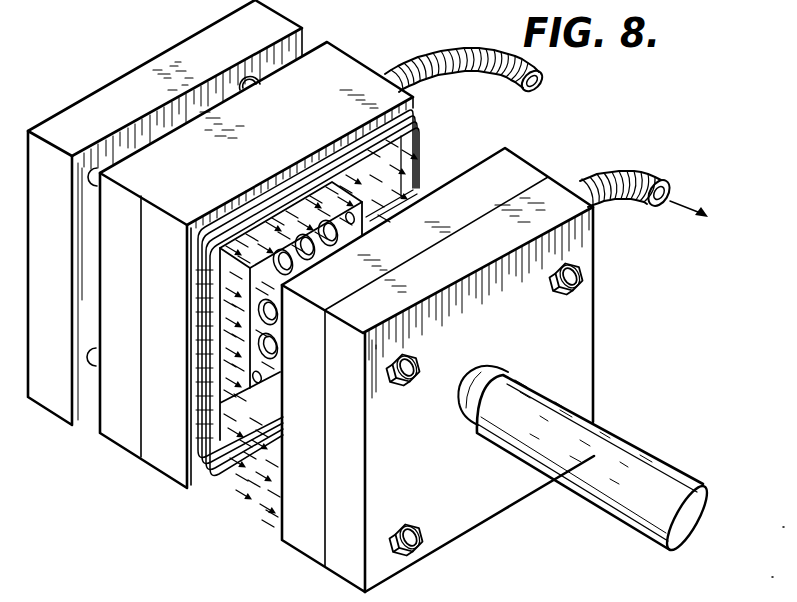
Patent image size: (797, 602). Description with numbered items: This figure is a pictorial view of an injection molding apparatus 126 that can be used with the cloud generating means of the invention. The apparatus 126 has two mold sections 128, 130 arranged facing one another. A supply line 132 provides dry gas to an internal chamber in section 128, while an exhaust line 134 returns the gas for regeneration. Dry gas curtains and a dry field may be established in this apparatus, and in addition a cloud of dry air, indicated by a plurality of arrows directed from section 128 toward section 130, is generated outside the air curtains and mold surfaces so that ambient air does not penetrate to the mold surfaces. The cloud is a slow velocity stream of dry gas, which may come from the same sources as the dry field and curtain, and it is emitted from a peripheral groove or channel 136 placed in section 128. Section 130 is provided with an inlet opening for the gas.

The injection molding apparatus 126 is at (540, 88).
The mold section 128 is at (371, 72).
The mold section 130 is at (520, 182).
The supply line 132 is at (470, 72).
The exhaust line 134 is at (643, 174).
The peripheral groove or channel 136 is at (348, 138).